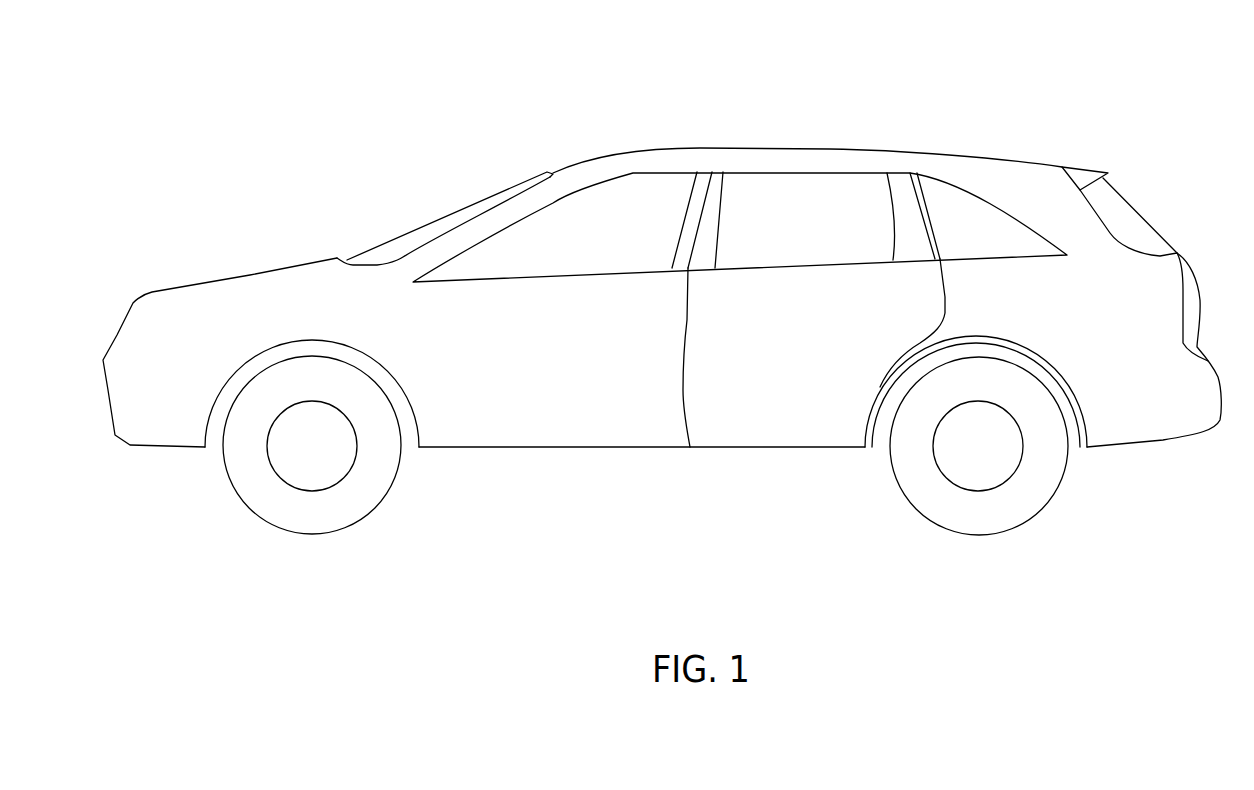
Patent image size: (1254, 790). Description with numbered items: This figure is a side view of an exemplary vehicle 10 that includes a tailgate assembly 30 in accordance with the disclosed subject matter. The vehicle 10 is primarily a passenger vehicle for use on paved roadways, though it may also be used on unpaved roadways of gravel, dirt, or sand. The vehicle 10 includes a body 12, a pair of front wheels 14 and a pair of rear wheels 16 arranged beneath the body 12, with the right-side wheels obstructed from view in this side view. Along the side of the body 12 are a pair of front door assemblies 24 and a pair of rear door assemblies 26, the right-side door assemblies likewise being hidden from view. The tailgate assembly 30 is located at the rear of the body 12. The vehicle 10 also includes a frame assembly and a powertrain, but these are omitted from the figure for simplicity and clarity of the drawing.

The vehicle 10 is at (1043, 109).
The body 12 is at (500, 448).
The front wheels 14 is at (310, 534).
The rear wheels 16 is at (978, 536).
The front door assemblies 24 is at (613, 392).
The rear door assemblies 26 is at (758, 392).
The tailgate assembly 30 is at (1188, 258).